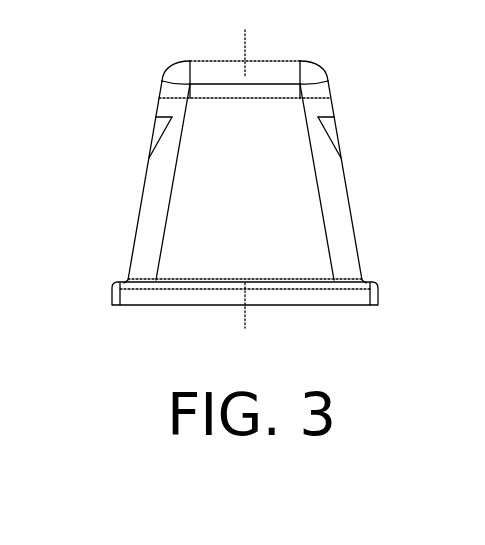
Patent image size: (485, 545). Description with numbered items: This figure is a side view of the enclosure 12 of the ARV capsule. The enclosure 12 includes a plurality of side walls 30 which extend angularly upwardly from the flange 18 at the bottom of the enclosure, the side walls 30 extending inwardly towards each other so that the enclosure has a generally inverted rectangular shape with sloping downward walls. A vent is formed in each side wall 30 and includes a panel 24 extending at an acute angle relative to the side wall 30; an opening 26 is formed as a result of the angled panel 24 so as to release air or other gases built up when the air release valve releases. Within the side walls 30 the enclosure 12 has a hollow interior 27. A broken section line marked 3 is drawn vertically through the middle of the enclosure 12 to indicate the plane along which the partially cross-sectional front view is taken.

The enclosure 12 is at (168, 72).
The panel 24 is at (160, 136).
The opening 26 is at (150, 148).
The side wall 30 is at (137, 227).
The flange 18 is at (112, 296).
The hollow interior 27 is at (256, 191).
The section line 3- 3 is at (246, 40).